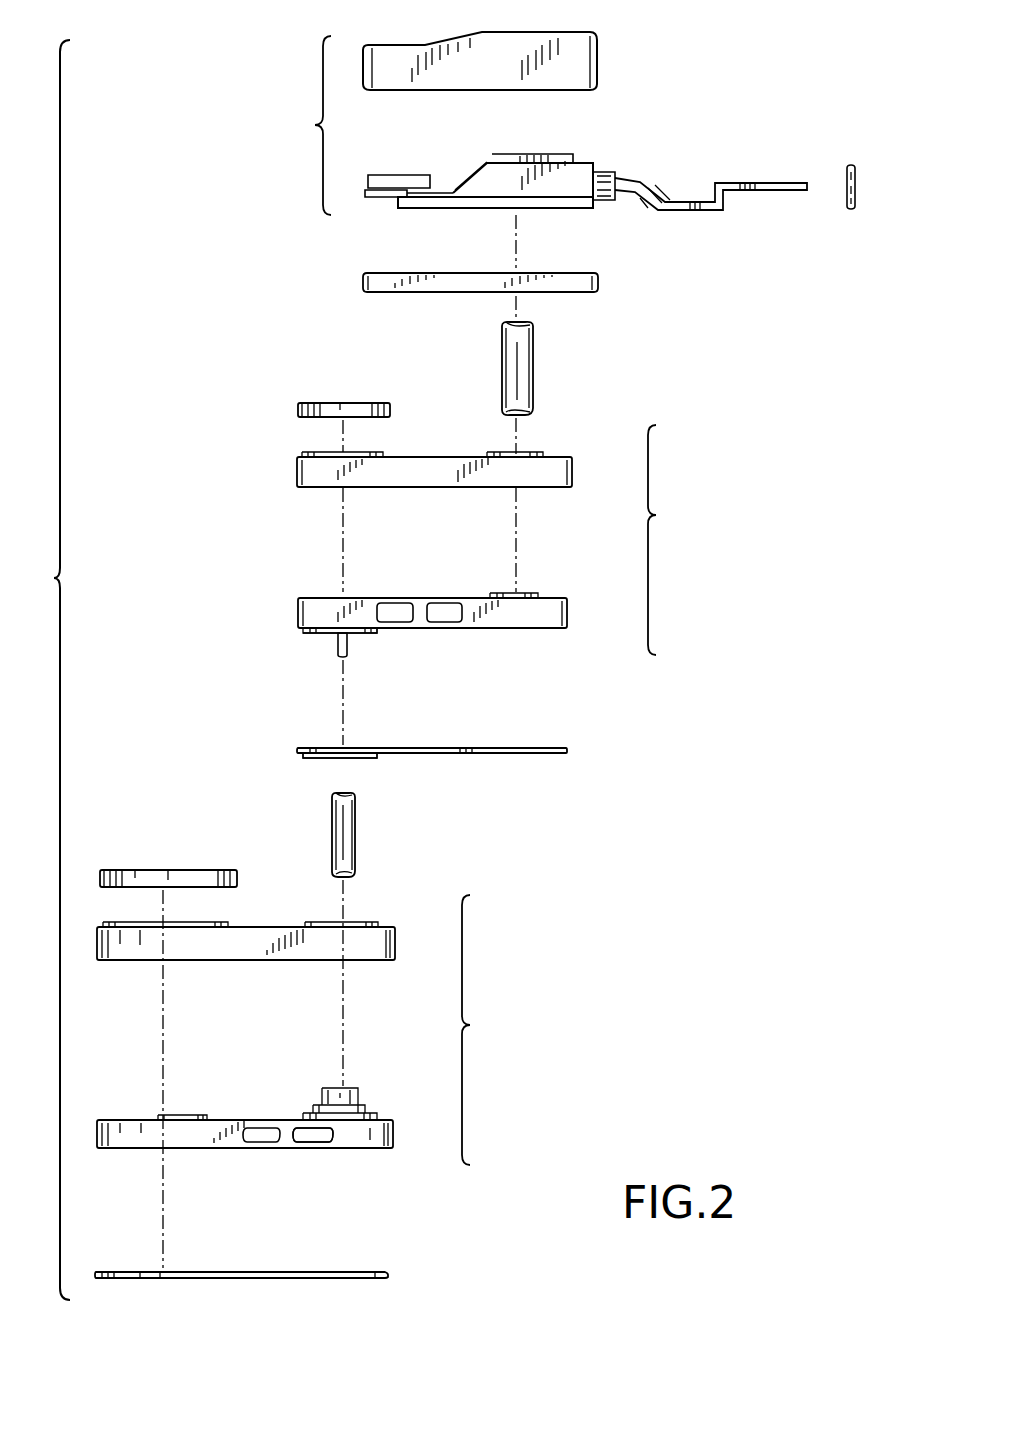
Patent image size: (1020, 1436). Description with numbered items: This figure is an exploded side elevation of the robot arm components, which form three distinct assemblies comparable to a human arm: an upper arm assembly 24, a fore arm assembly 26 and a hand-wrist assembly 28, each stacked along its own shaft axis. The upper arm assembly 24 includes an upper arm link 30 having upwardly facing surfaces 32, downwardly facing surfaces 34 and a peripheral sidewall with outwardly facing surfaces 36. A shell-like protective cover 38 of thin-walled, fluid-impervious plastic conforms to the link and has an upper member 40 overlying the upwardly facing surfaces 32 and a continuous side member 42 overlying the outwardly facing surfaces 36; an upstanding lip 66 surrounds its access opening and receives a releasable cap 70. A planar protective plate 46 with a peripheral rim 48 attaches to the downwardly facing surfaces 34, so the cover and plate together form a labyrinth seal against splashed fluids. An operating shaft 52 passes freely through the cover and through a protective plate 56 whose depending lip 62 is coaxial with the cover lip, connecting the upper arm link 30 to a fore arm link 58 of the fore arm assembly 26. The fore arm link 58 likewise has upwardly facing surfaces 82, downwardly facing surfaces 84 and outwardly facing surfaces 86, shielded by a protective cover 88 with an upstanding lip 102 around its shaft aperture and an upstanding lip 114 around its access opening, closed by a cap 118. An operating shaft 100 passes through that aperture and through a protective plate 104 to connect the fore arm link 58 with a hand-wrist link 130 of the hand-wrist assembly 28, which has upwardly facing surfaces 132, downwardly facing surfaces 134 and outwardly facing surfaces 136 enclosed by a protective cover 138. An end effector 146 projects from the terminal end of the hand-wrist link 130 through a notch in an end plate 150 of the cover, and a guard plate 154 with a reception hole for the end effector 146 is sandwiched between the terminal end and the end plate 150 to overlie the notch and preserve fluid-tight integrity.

The upper arm assembly 24 is at (487, 1030).
The fore arm assembly 26 is at (679, 538).
The hand-wrist assembly 28 is at (304, 125).
The upper arm link 30 is at (316, 1152).
The upwardly facing surfaces 32 is at (268, 1120).
The downwardly facing surfaces 34 is at (233, 1150).
The outwardly facing surfaces 36 is at (394, 1134).
The protective cover 38 is at (292, 926).
The upper member 40 is at (250, 927).
The continuous side member 42 is at (396, 946).
The protective plate 46 is at (258, 1282).
The peripheral rim 48 is at (390, 1276).
The operating shaft 52 is at (332, 818).
The protective plate 56 is at (525, 756).
The fore arm link 58 is at (296, 612).
The depending lip 62 is at (375, 758).
The upstanding lip 66 is at (127, 925).
The cap 70 is at (157, 870).
The upwardly facing surfaces 82 is at (443, 598).
The downwardly facing surfaces 84 is at (550, 630).
The outwardly facing surfaces 86 is at (566, 618).
The protective cover 88 is at (296, 472).
The operating shaft 100 is at (533, 365).
The upstanding lip 102 is at (530, 453).
The protective plate 104 is at (603, 284).
The upstanding lip 114 is at (372, 455).
The cap 118 is at (343, 403).
The hand-wrist link 130 is at (592, 157).
The upwardly facing surfaces 132 is at (475, 183).
The downwardly facing surfaces 134 is at (570, 210).
The outwardly facing surfaces 136 is at (384, 164).
The protective cover 138 is at (603, 67).
The end effector 146 is at (773, 183).
The end plate 150 is at (597, 45).
The guard plate 154 is at (857, 208).